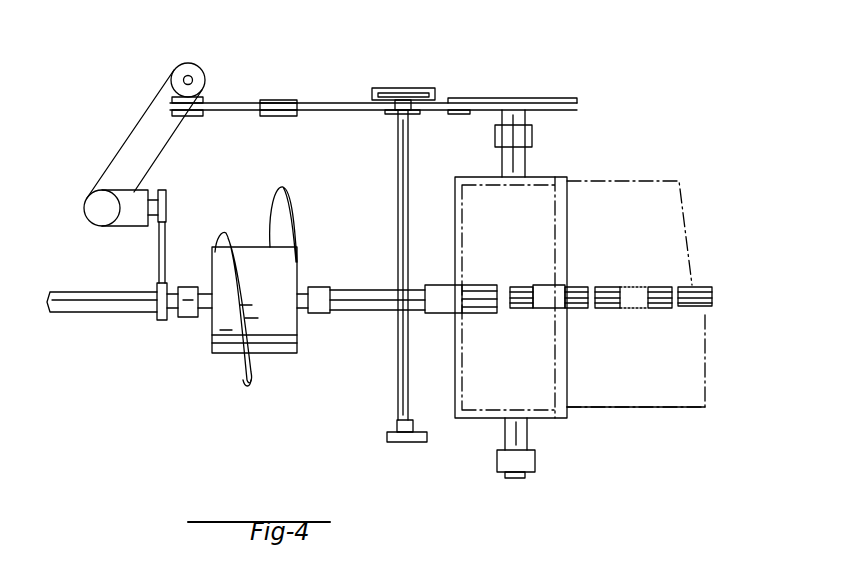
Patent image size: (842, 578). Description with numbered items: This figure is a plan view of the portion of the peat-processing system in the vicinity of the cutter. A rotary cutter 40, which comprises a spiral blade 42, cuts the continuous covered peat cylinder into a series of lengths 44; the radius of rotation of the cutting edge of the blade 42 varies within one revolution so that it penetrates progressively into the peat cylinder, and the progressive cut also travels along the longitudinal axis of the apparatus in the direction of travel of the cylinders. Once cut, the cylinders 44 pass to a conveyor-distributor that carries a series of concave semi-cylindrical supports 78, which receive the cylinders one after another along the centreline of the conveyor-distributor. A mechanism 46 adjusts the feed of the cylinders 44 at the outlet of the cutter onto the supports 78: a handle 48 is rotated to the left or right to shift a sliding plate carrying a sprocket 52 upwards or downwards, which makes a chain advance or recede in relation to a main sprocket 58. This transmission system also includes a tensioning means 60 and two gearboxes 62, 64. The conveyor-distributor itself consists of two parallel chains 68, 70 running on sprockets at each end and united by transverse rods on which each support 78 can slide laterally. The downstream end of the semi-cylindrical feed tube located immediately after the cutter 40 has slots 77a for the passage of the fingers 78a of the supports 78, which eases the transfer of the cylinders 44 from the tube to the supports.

The rotary cutter 40 is at (314, 259).
The spiral blade 42 is at (242, 374).
The lengths 44 is at (236, 302).
The mechanism 46 is at (449, 78).
The handle 48 is at (391, 399).
The sprocket 52 is at (391, 80).
The main sprocket 58 is at (560, 78).
The tensioning means 60 is at (286, 116).
The gearbox 62 is at (205, 95).
The gearbox 64 is at (127, 228).
The chain 68 is at (640, 182).
The chain 70 is at (637, 410).
The slots 77a is at (476, 315).
The support 78 is at (690, 282).
The fingers 78a is at (530, 287).